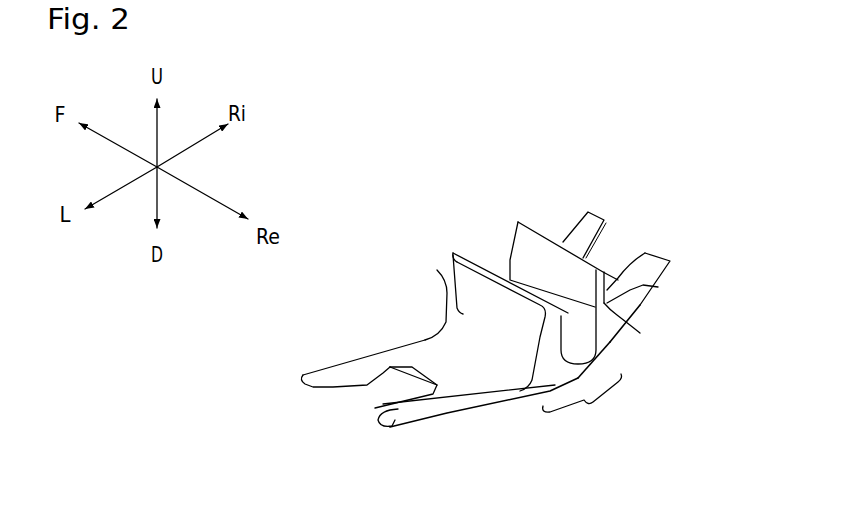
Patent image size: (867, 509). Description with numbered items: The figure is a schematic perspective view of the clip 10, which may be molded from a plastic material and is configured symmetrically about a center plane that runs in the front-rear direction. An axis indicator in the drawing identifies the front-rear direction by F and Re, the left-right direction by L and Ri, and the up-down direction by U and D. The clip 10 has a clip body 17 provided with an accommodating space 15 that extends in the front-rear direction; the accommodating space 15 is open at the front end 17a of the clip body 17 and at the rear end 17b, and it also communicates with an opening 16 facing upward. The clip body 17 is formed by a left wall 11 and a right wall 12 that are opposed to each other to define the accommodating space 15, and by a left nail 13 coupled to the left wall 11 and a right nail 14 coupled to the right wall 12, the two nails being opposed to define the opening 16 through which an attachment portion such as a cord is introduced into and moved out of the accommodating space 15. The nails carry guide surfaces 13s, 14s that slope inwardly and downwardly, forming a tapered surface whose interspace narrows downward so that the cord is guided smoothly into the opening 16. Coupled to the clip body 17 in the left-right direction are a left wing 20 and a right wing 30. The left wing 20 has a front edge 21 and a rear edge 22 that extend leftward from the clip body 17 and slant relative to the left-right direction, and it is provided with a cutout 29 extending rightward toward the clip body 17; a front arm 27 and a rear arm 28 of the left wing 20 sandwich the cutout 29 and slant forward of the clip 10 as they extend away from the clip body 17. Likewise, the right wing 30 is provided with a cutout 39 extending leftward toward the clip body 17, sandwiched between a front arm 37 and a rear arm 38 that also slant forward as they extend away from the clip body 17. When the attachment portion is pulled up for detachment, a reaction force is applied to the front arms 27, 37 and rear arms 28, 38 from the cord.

The clip 10 is at (346, 270).
The left wall 11 is at (437, 270).
The right wall 12 is at (622, 320).
The left nail 13 is at (540, 337).
The guide surface 13s is at (480, 266).
The right nail 14 is at (658, 287).
The guide surface 14s is at (518, 235).
The accommodating space 15 is at (588, 348).
The opening 16 is at (542, 282).
The clip body 17 is at (582, 406).
The front end 17a is at (445, 237).
The rear end 17b is at (612, 367).
The left wing 20 is at (471, 402).
The front edge 21 is at (390, 352).
The rear edge 22 is at (450, 410).
The front arm 27 is at (344, 364).
The rear arm 28 is at (378, 420).
The cutout 29 is at (365, 400).
The right wing 30 is at (623, 328).
The front arm 37 is at (591, 211).
The rear arm 38 is at (667, 258).
The cutout 39 is at (607, 263).